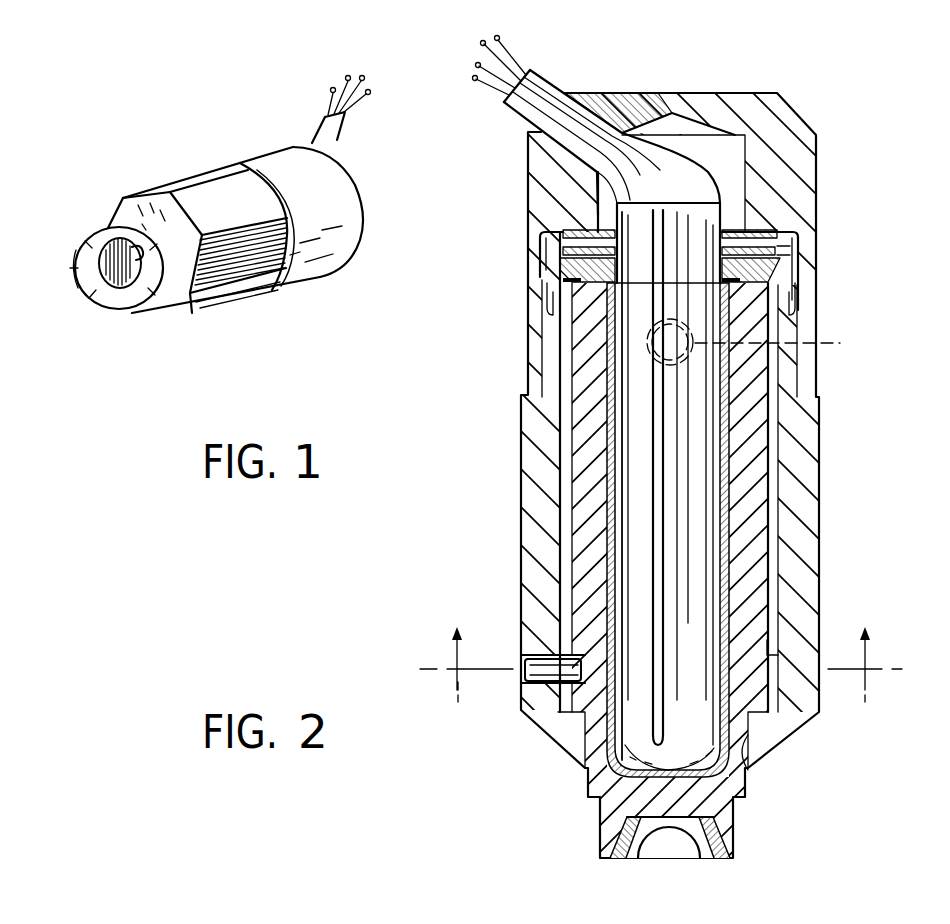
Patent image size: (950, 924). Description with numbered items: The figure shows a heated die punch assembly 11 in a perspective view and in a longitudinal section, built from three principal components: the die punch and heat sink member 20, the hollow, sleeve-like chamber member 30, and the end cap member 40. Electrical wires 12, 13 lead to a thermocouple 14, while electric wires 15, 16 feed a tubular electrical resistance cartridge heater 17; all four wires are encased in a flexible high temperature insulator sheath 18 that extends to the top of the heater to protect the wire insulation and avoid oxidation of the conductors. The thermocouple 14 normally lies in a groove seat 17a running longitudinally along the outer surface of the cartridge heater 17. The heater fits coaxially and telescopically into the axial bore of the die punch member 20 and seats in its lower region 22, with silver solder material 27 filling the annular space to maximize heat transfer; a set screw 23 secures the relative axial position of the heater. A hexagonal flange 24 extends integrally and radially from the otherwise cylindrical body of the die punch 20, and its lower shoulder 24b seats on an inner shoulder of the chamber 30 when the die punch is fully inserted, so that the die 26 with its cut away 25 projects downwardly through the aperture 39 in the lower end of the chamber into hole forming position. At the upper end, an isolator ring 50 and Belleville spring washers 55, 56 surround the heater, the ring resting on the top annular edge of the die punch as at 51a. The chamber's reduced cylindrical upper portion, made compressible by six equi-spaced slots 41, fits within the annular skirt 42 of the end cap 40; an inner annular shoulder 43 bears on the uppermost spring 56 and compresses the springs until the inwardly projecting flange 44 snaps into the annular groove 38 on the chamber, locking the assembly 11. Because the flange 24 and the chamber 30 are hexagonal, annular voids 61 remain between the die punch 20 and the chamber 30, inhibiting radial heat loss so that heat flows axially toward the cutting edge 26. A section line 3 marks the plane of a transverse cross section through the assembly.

In FIG. 1, the die punch assembly 11 is at (250, 352).
In FIG. 1, the electrical wire 12 is at (330, 86).
In FIG. 2, the electrical wire 12 is at (477, 82).
In FIG. 1, the electrical wire 13 is at (350, 72).
In FIG. 2, the electrical wire 13 is at (480, 56).
In FIG. 2, the thermocouple 14 is at (668, 460).
In FIG. 1, the electric wire 15 is at (371, 73).
In FIG. 2, the electric wire 15 is at (493, 22).
In FIG. 1, the electric wire 16 is at (371, 91).
In FIG. 2, the electric wire 16 is at (497, 40).
In FIG. 2, the tubular electrical resistance cartridge heater 17 is at (633, 412).
In FIG. 2, the groove seat 17a is at (680, 412).
In FIG. 1, the flexible high temperature insulator sheath 18 is at (343, 134).
In FIG. 2, the flexible high temperature insulator sheath 18 is at (548, 90).
In FIG. 1, the die punch and heat sink member 20 is at (99, 222).
In FIG. 2, the die punch and heat sink member 20 is at (762, 462).
In FIG. 2, the lower region 22 is at (635, 755).
In FIG. 2, the set screw 23 is at (762, 342).
In FIG. 2, the hexagonal flange 24 is at (772, 688).
In FIG. 2, the lower shoulder 24b is at (548, 672).
In FIG. 1, the cut away 25 is at (132, 304).
In FIG. 2, the cut away 25 is at (637, 838).
In FIG. 1, the die 26 is at (75, 268).
In FIG. 2, the die 26 is at (703, 858).
In FIG. 2, the silver solder material 27 is at (727, 512).
In FIG. 1, the chamber member 30 is at (171, 182).
In FIG. 2, the chamber member 30 is at (532, 485).
In FIG. 2, the annular groove 38 is at (538, 318).
In FIG. 2, the aperture 39 is at (742, 748).
In FIG. 1, the end cap member 40 is at (258, 148).
In FIG. 2, the end cap member 40 is at (800, 105).
In FIG. 2, the slots 41 is at (618, 98).
In FIG. 2, the annular skirt 42 is at (800, 232).
In FIG. 2, the inner annular shoulder 43 is at (800, 254).
In FIG. 2, the inwardly projecting flange 44 is at (545, 283).
In FIG. 2, the isolator ring 50 is at (780, 270).
In FIG. 2, the resting location of isolator ring flange 51a is at (798, 306).
In FIG. 2, the Belleville spring washer 55 is at (575, 254).
In FIG. 2, the Belleville spring washer 56 is at (575, 230).
In FIG. 2, the annular voids 61 is at (575, 540).
In FIG. 2, the section line 3- 3 is at (661, 669).